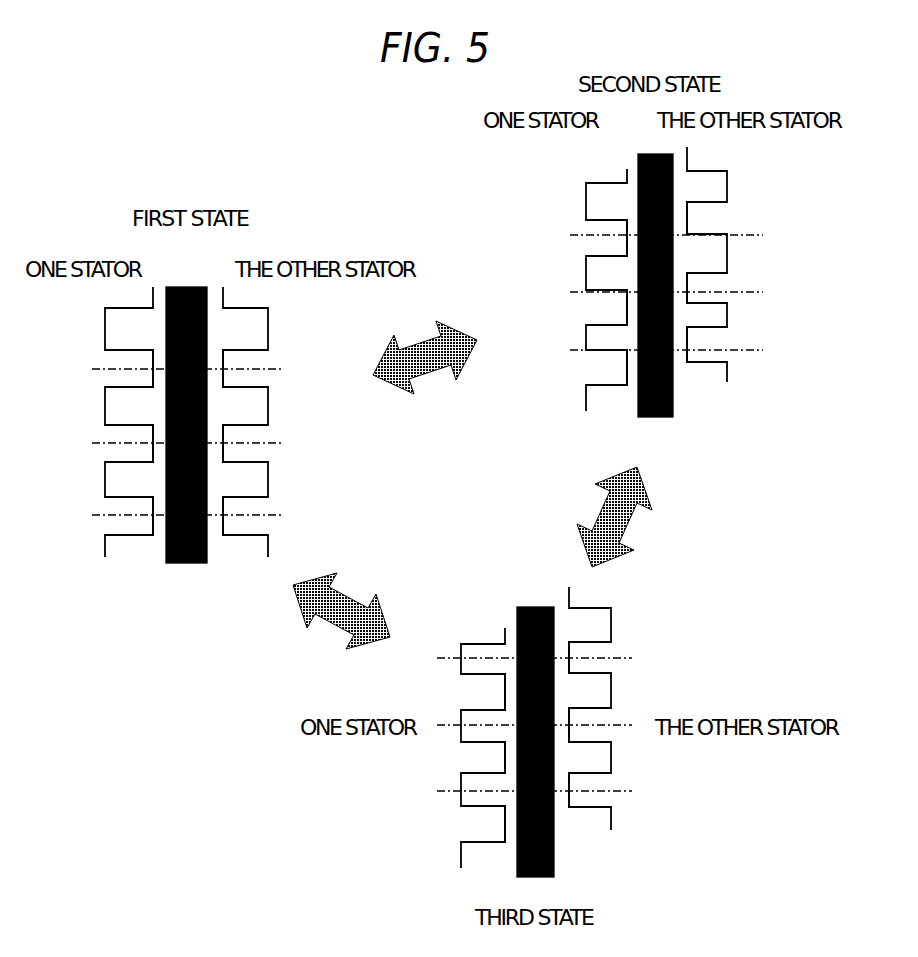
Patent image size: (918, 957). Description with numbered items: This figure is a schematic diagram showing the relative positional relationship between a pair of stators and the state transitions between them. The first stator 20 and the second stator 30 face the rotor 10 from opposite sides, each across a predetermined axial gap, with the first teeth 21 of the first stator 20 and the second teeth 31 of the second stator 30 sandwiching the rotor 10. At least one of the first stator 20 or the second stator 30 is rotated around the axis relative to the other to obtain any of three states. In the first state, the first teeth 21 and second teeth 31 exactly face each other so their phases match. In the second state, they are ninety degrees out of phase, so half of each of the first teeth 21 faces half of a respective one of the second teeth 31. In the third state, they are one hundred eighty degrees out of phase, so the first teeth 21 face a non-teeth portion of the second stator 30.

The rotor 10 is at (191, 579).
The first stator 20 is at (335, 518).
The first teeth 21 is at (331, 522).
The second stator 30 is at (486, 520).
The second teeth 31 is at (516, 477).